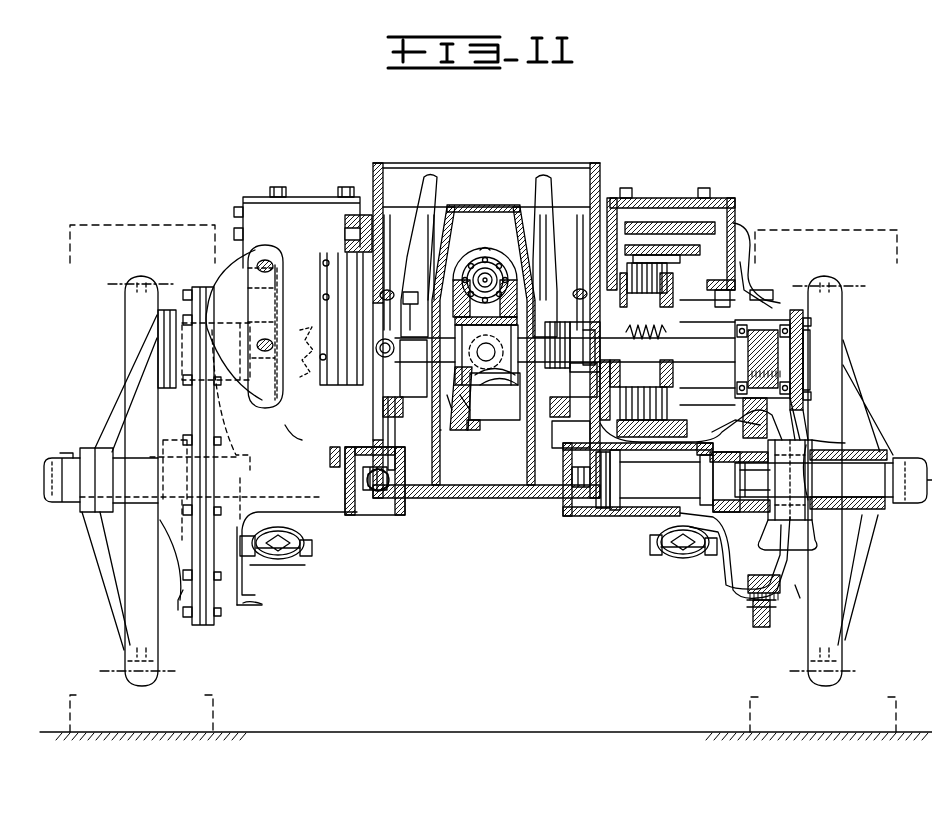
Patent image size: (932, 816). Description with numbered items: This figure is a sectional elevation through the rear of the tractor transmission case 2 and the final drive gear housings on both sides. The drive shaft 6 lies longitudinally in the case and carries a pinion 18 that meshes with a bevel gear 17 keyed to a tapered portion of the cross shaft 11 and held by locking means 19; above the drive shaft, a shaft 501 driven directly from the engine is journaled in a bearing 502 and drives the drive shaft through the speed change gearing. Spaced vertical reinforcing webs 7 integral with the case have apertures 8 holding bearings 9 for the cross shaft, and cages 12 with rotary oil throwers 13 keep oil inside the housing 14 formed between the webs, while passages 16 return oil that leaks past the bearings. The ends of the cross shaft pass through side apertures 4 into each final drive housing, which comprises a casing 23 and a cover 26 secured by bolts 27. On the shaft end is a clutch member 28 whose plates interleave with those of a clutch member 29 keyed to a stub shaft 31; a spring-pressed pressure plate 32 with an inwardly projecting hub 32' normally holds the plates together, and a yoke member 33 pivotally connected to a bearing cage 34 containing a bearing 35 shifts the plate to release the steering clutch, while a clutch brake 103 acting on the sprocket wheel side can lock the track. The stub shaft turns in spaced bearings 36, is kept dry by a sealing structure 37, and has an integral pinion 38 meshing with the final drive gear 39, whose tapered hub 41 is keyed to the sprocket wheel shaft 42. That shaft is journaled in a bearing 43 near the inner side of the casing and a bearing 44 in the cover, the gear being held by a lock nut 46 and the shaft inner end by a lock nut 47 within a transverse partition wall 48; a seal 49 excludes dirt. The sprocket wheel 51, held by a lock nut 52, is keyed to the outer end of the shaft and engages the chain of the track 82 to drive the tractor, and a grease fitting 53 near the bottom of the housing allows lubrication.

The transmission case 2 is at (470, 493).
The side apertures 4 is at (365, 245).
The drive shaft 6 is at (485, 390).
The vertical reinforcing webs 7 is at (433, 472).
The apertures 8 is at (432, 262).
The bearings 9 is at (565, 355).
The cross shaft 11 is at (453, 343).
The cages 12 is at (410, 370).
The rotary oil throwers 13 is at (557, 363).
The housing 14 is at (503, 455).
The passages 16 is at (437, 400).
The bevel gear 17 is at (447, 405).
The pinion 18 is at (466, 412).
The locking means 19 is at (505, 300).
The casing 23 is at (328, 512).
The cover 26 is at (182, 592).
The bolts 27 is at (193, 318).
The clutch member 28 is at (645, 340).
The clutch member 29 is at (340, 285).
The stub shaft 31 is at (232, 335).
The pressure plate 32 is at (497, 245).
The hub 32' is at (442, 357).
The yoke member 33 is at (415, 222).
The bearing cage 34 is at (382, 325).
The bearing 35 is at (571, 434).
The bearings 36 is at (772, 340).
The sealing structure 37 is at (702, 294).
The pinion 38 is at (182, 343).
The final drive gear 39 is at (243, 603).
The tapered hub 41 is at (248, 510).
The sprocket wheel shaft 42 is at (240, 478).
The bearing 43 is at (378, 492).
The bearing 44 is at (787, 512).
The lock nut 46 is at (700, 488).
The lock nut 47 is at (398, 508).
The transverse partition wall 48 is at (617, 510).
The seal 49 is at (812, 443).
The sprocket wheel 51 is at (128, 355).
The lock nut 52 is at (43, 482).
The grease fitting 53 is at (285, 560).
The track 82 is at (72, 250).
The clutch brake 103 is at (322, 257).
The shaft 501 is at (490, 268).
The bearing 502 is at (486, 280).